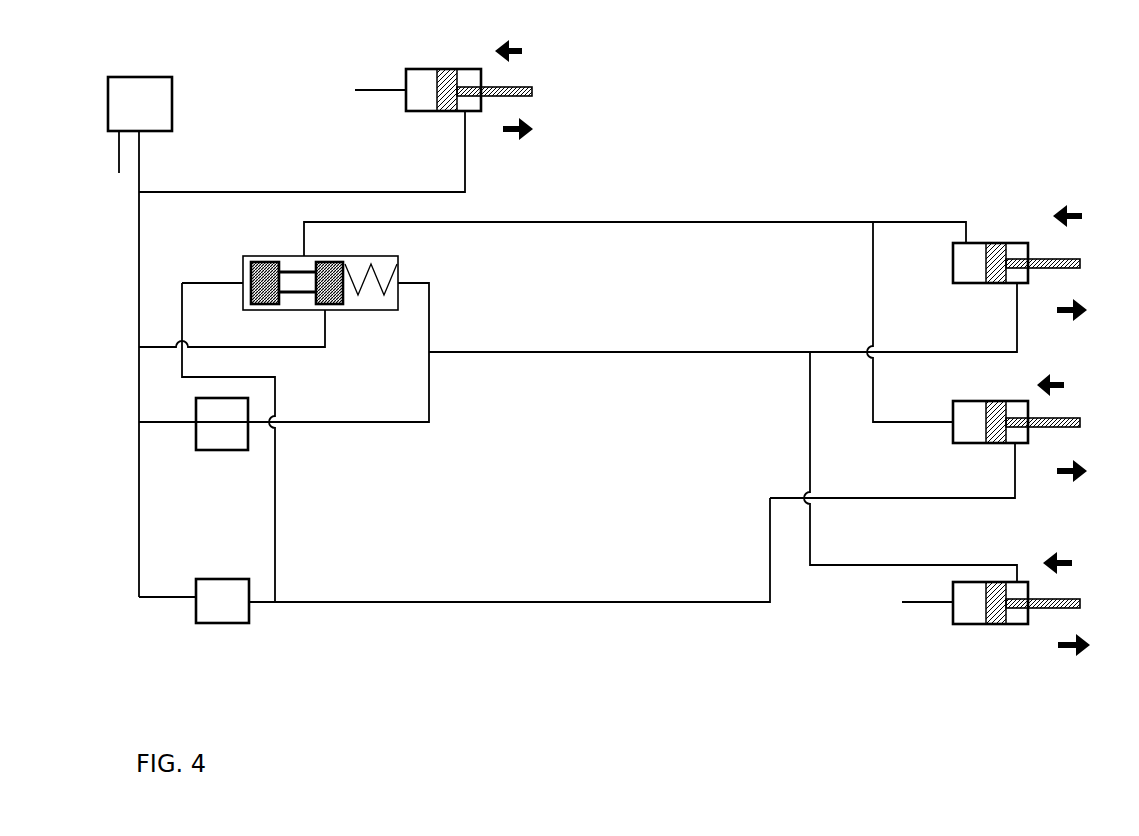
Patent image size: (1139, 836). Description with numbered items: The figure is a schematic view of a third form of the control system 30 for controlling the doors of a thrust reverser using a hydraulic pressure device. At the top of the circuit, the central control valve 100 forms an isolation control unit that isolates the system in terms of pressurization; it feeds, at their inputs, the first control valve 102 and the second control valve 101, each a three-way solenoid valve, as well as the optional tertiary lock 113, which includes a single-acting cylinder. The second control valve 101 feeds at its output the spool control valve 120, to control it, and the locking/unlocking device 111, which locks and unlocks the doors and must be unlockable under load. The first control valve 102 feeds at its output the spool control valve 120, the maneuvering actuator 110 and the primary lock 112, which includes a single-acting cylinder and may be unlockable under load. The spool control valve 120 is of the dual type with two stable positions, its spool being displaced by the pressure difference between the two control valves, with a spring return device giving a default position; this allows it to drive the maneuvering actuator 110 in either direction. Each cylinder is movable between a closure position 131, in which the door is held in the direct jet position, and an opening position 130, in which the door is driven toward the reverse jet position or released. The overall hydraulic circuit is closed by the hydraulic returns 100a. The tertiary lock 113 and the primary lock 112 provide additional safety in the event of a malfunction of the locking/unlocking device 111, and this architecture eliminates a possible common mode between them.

The control system 30 is at (642, 193).
The central control valve 100 is at (172, 115).
The hydraulic returns 100a is at (119, 165).
The second control valve 101 is at (200, 612).
The first control valve 102 is at (196, 447).
The maneuvering actuator 110 is at (955, 283).
The locking/unlocking device 111 is at (953, 440).
The primary lock 112 is at (953, 622).
The tertiary lock 113 is at (455, 69).
The spool control valve 120 is at (398, 258).
The opening position 130 is at (522, 52).
The closure position 131 is at (525, 138).